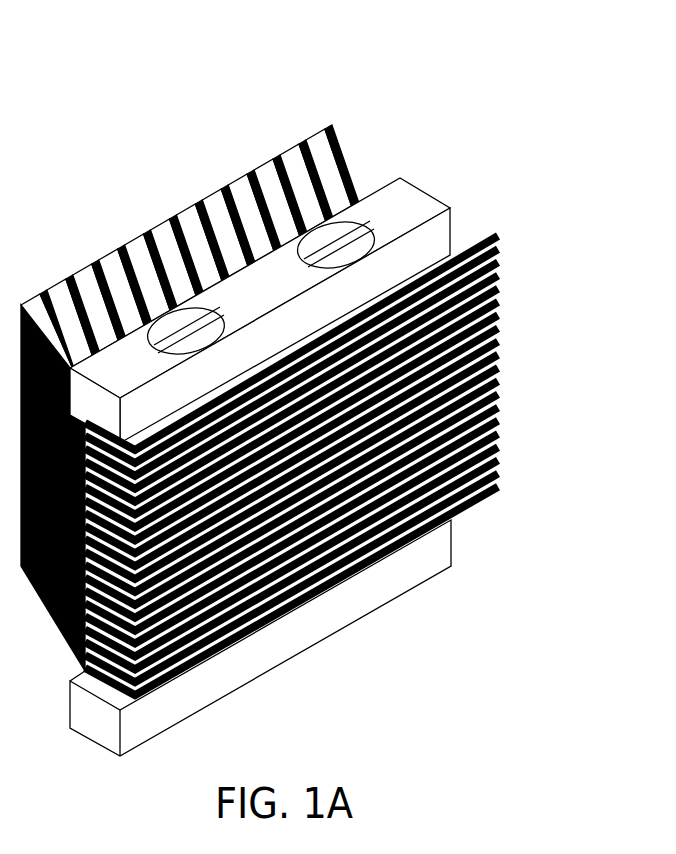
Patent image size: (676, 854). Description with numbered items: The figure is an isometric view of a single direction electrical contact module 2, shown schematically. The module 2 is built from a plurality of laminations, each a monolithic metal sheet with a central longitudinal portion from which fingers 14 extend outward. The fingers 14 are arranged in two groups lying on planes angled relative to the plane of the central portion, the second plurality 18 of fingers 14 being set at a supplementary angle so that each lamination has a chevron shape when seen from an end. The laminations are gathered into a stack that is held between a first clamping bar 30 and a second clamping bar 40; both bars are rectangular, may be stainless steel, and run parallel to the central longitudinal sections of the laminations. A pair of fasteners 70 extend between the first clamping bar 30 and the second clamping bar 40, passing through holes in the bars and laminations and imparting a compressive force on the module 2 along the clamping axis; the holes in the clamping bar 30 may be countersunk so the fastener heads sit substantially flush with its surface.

The single direction electrical contact module 2 is at (124, 69).
The fingers 14 is at (56, 283).
The second plurality of fingers 18 is at (491, 265).
The first clamping bar 30 is at (416, 182).
The second clamping bar 40 is at (162, 702).
The fasteners 70 is at (166, 312).